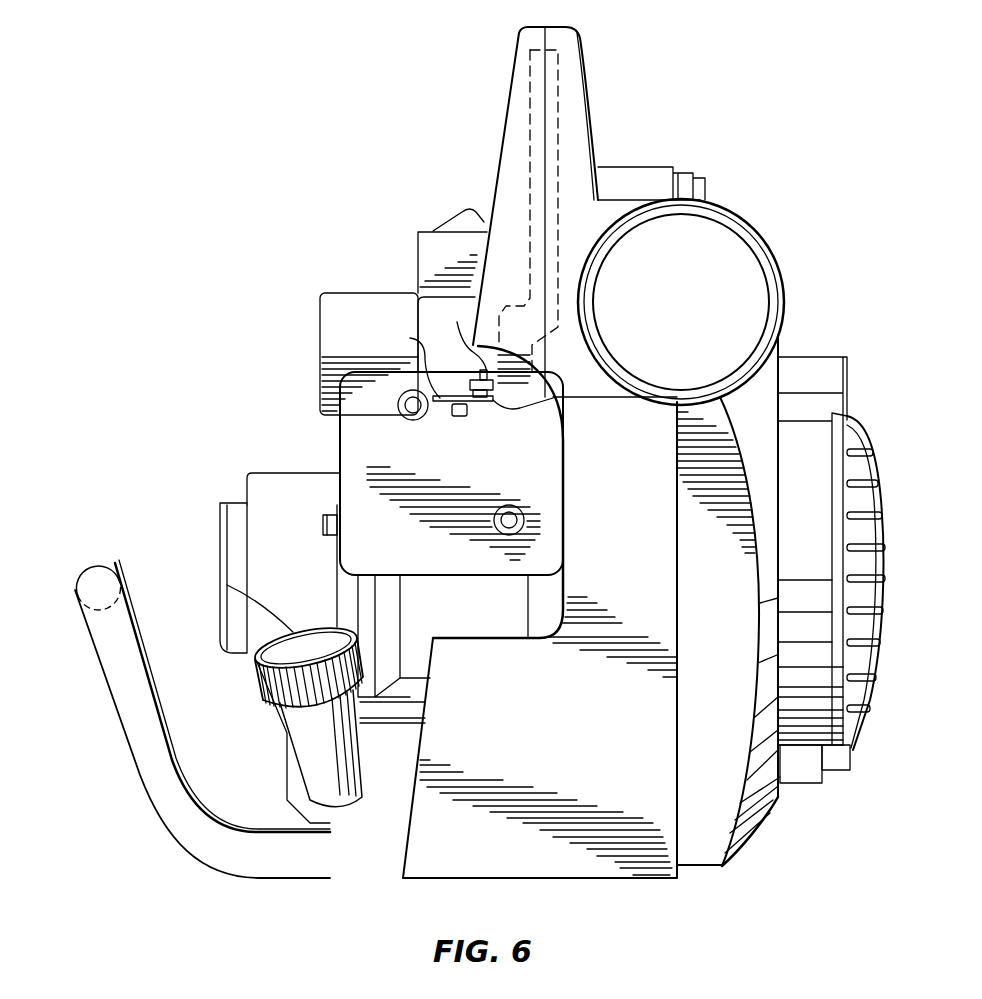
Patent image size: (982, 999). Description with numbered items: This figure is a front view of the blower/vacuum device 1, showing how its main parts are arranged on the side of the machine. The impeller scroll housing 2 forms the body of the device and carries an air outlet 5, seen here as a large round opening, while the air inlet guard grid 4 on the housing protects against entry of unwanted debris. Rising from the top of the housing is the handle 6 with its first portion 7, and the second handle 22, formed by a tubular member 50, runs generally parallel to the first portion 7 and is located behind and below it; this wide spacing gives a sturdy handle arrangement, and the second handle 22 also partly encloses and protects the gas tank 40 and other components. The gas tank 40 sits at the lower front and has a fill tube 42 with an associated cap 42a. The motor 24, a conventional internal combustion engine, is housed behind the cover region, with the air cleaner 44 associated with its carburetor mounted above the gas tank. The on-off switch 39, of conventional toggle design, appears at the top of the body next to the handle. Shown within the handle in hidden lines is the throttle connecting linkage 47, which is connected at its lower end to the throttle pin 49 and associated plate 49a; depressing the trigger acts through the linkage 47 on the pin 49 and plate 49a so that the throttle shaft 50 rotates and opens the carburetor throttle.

The blower/vacuum device 1 is at (276, 378).
The impeller scroll housing 2 is at (762, 808).
The air inlet guard grid 4 is at (880, 576).
The air outlet 5 is at (690, 284).
The handle 6 is at (580, 115).
The first portion of handle 7 is at (100, 13).
The second handle 22 is at (103, 578).
The motor 24 is at (470, 612).
The on-off switch 39 is at (465, 210).
The gas tank 40 is at (400, 753).
The fill tube 42 is at (237, 535).
The cap 42a is at (267, 687).
The air cleaner 44 is at (353, 374).
The throttle connecting linkage 47 is at (530, 76).
The throttle pin 49 is at (452, 334).
The plate 49a is at (418, 343).
The throttle shaft 50 is at (450, 417).